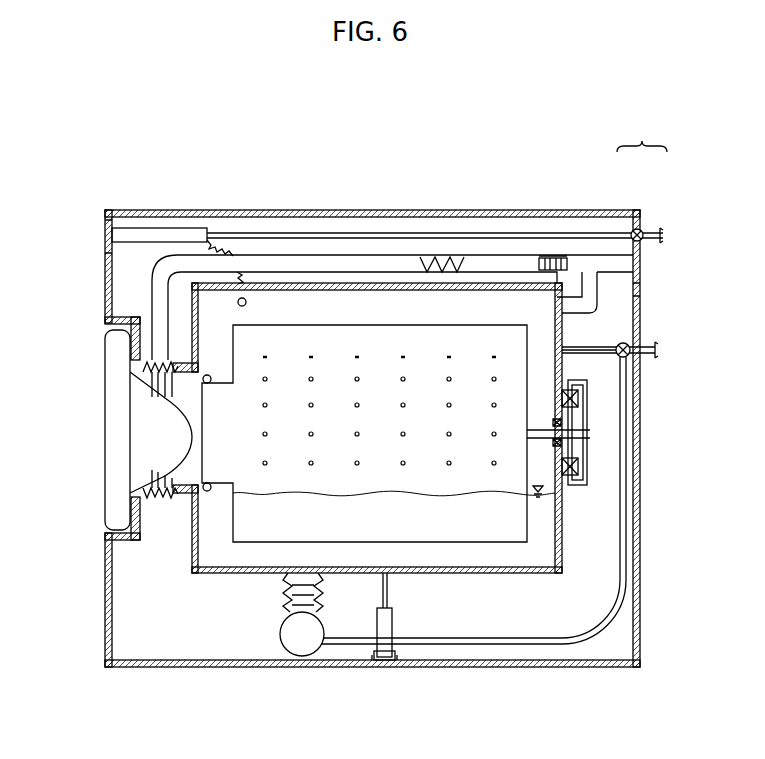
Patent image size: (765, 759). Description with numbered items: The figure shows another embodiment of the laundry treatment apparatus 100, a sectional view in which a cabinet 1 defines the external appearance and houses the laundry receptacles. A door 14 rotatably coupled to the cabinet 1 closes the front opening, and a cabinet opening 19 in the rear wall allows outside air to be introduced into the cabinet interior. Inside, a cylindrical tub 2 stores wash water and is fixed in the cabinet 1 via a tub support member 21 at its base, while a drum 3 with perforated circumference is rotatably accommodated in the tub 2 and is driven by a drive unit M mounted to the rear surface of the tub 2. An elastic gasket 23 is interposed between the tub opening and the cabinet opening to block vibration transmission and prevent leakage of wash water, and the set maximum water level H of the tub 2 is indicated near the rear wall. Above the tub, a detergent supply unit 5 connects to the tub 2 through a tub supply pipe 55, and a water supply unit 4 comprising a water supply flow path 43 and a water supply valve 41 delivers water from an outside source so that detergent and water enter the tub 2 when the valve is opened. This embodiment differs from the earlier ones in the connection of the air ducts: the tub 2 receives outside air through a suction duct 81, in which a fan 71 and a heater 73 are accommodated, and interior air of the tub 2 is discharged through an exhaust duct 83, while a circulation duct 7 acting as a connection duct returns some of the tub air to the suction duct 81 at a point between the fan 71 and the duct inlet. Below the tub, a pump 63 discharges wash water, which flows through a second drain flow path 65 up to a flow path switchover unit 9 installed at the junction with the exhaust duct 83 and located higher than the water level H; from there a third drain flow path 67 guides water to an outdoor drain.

The laundry treatment apparatus 100 is at (604, 98).
The cabinet 1 is at (500, 213).
The cabinet opening 19 is at (640, 289).
The door 14 is at (115, 427).
The gasket 23 is at (162, 505).
The tub 2 is at (218, 558).
The drum 3 is at (497, 535).
The set maximum water level H is at (394, 481).
The detergent supply unit 5 is at (151, 226).
The tub supply pipe 55 is at (223, 240).
The suction duct 81 is at (353, 256).
The heater 73 is at (443, 270).
The fan 71 is at (553, 260).
The circulation duct 7 is at (590, 297).
The water supply unit 4 is at (642, 134).
The water supply flow path 43 is at (607, 238).
The water supply valve 41 is at (642, 233).
The flow path switchover unit 9 is at (627, 358).
The third drain flow path 67 is at (651, 344).
The exhaust duct 83 is at (593, 355).
The drive unit M is at (602, 458).
The second drain flow path 65 is at (625, 563).
The pump 63 is at (296, 650).
The tub support member 21 is at (388, 628).